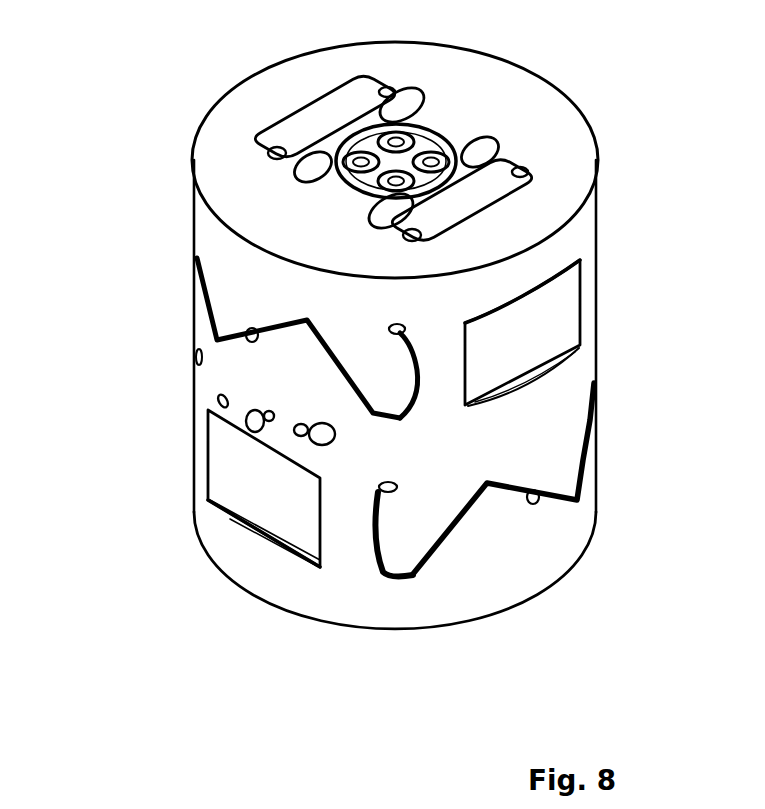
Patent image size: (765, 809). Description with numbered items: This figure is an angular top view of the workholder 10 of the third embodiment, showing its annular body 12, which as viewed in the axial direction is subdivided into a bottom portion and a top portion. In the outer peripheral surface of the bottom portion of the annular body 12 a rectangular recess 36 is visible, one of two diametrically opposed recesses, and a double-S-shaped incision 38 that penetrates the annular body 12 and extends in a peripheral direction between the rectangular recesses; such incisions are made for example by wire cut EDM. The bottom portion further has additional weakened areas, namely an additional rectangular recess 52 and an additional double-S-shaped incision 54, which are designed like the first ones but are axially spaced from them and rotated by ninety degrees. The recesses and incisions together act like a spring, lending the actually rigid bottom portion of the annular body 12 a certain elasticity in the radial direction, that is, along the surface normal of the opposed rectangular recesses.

The shaft seal assembly 10 is at (165, 41).
The annular body 12 is at (503, 84).
The rectangular recess 36 is at (550, 330).
The double-S-shaped incision 38 is at (198, 308).
The additional rectangular recess 52 is at (232, 490).
The additional double-S-shaped incision 54 is at (450, 530).